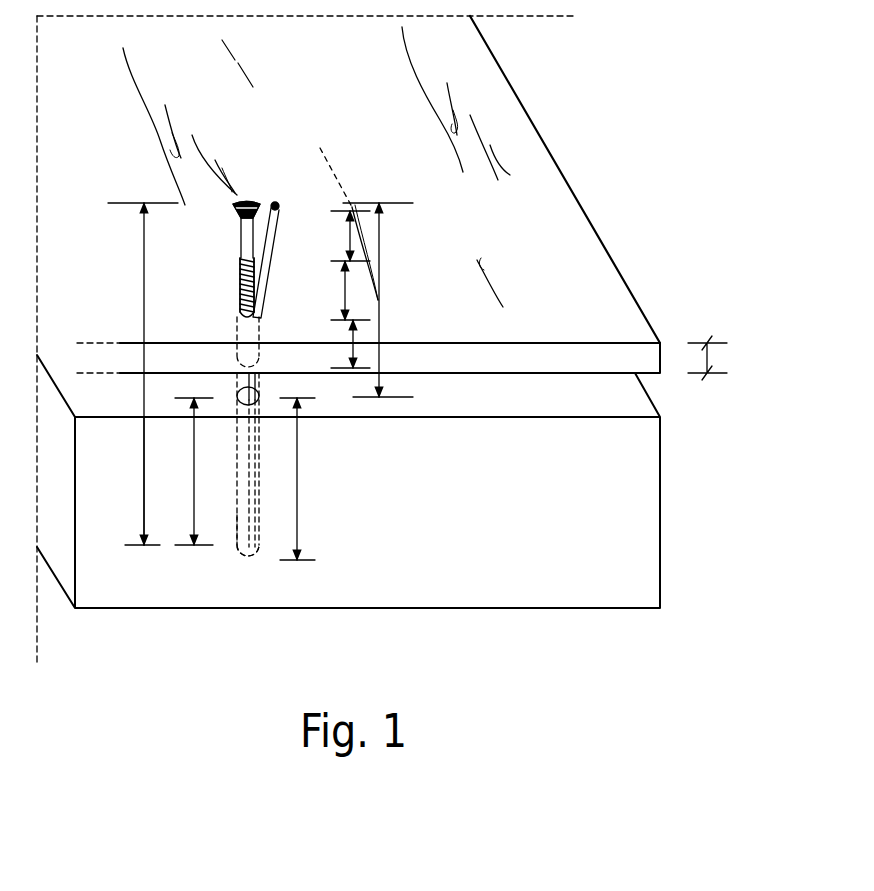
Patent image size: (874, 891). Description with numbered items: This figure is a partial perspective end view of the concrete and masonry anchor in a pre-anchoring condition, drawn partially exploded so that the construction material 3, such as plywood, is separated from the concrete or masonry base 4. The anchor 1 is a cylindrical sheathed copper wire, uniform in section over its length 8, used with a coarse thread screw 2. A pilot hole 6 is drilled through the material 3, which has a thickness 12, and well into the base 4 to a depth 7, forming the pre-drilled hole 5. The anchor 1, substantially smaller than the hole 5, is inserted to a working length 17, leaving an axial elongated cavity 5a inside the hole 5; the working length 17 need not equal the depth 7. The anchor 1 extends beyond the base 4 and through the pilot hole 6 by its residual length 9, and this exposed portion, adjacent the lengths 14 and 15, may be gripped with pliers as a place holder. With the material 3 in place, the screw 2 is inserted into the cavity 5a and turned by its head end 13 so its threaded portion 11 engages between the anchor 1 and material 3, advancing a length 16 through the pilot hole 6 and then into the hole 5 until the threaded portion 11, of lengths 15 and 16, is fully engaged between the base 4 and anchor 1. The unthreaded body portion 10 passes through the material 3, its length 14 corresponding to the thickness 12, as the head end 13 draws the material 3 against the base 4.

The anchor 1 is at (274, 203).
The coarse thread screw 2 is at (248, 200).
The construction material 3 is at (613, 312).
The concrete or masonry base 4 is at (642, 470).
The pre-drilled hole 5 is at (262, 442).
The elongated cavity 5a is at (237, 515).
The pilot hole 6 is at (255, 330).
The depth 7 is at (297, 515).
The length 8 is at (145, 507).
The residual length 9 is at (379, 248).
The unthreaded body portion 10 is at (240, 235).
The threaded portion 11 is at (238, 300).
The thickness 12 is at (714, 345).
The head end 13 is at (243, 197).
The length 14 is at (350, 233).
The length 15 is at (345, 296).
The length 16 is at (353, 350).
The working length 17 is at (193, 502).